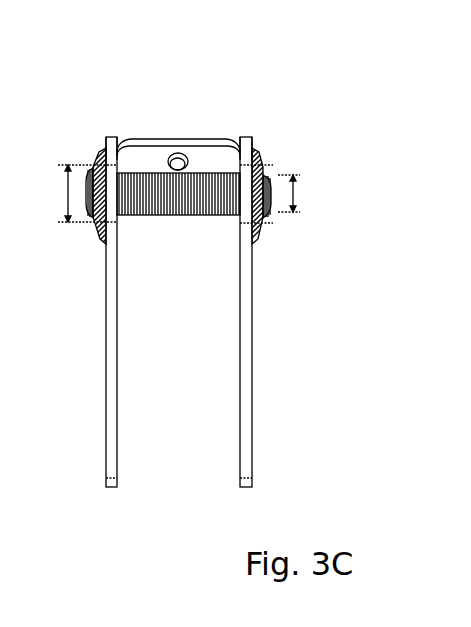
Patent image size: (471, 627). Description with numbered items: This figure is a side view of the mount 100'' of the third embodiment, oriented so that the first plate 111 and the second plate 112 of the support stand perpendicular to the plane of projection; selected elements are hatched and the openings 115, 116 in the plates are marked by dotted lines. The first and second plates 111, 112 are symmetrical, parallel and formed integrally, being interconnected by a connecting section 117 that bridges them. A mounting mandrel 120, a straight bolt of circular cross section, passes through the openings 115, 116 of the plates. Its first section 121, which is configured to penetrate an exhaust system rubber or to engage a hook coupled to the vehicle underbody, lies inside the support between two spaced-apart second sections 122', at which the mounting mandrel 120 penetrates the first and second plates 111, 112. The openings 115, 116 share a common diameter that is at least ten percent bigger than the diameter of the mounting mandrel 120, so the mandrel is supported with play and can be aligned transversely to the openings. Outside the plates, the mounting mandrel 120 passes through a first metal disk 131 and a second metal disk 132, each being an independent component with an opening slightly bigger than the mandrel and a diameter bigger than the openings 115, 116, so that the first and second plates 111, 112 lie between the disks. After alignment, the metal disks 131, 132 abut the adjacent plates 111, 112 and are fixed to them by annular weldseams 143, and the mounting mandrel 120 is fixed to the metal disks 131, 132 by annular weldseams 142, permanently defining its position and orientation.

The mount 100'' is at (172, 288).
The first plate 111 is at (107, 462).
The second plate 112 is at (252, 471).
The opening 115 is at (117, 220).
The opening 116 is at (241, 218).
The connecting section 117 is at (172, 140).
The mounting mandrel 120 is at (213, 183).
The first section 121 is at (238, 73).
The second section 122' is at (180, 61).
The first metal disk 131 is at (100, 224).
The second metal disk 132 is at (262, 223).
The annular weldseam 142 is at (99, 163).
The annular weldseam 143 is at (105, 148).